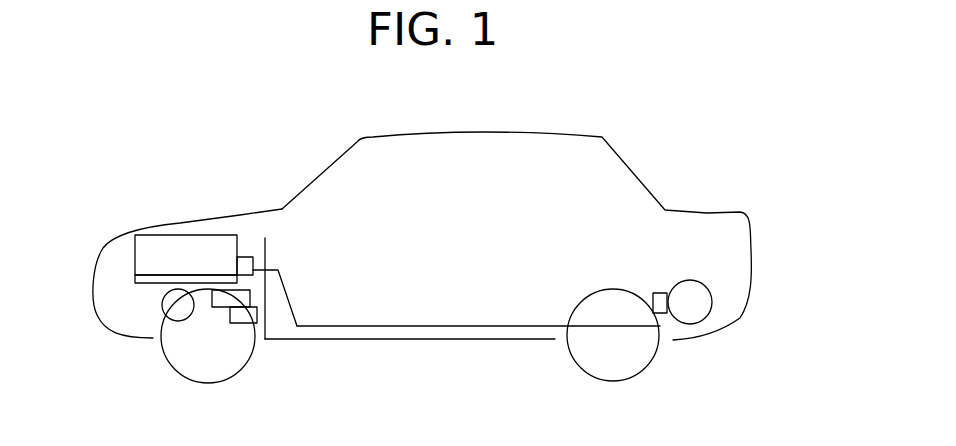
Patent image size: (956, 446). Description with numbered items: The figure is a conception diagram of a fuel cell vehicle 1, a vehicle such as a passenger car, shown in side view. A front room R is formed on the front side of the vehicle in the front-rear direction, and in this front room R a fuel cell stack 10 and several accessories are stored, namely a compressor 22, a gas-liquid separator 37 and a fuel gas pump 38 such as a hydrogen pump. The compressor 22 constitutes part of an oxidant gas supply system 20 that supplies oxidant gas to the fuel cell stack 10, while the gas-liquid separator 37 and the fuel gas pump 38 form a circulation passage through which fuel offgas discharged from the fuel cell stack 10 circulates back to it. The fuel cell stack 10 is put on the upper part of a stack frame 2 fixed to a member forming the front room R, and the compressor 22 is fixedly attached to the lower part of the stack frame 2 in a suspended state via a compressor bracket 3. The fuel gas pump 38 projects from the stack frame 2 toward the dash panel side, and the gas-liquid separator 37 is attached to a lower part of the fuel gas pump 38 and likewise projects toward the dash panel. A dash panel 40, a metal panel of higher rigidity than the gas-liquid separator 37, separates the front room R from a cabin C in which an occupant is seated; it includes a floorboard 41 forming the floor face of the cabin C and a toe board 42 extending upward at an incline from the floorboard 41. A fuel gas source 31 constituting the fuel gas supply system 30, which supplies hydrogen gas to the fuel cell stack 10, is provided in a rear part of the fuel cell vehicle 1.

The fuel cell vehicle 1 is at (457, 102).
The stack frame 2 is at (135, 285).
The compressor bracket 3 is at (217, 285).
The fuel cell stack 10 is at (212, 237).
The oxidant gas supply system 20 is at (158, 301).
The compressor 22 is at (187, 308).
The fuel gas supply system 30 is at (471, 322).
The fuel gas source 31 is at (695, 285).
The gas-liquid separator 37 is at (248, 312).
The fuel gas pump 38 is at (225, 300).
The dash panel 40 is at (268, 247).
The floorboard 41 is at (323, 340).
The toe board 42 is at (273, 323).
The front room R is at (117, 279).
The cabin C is at (462, 230).